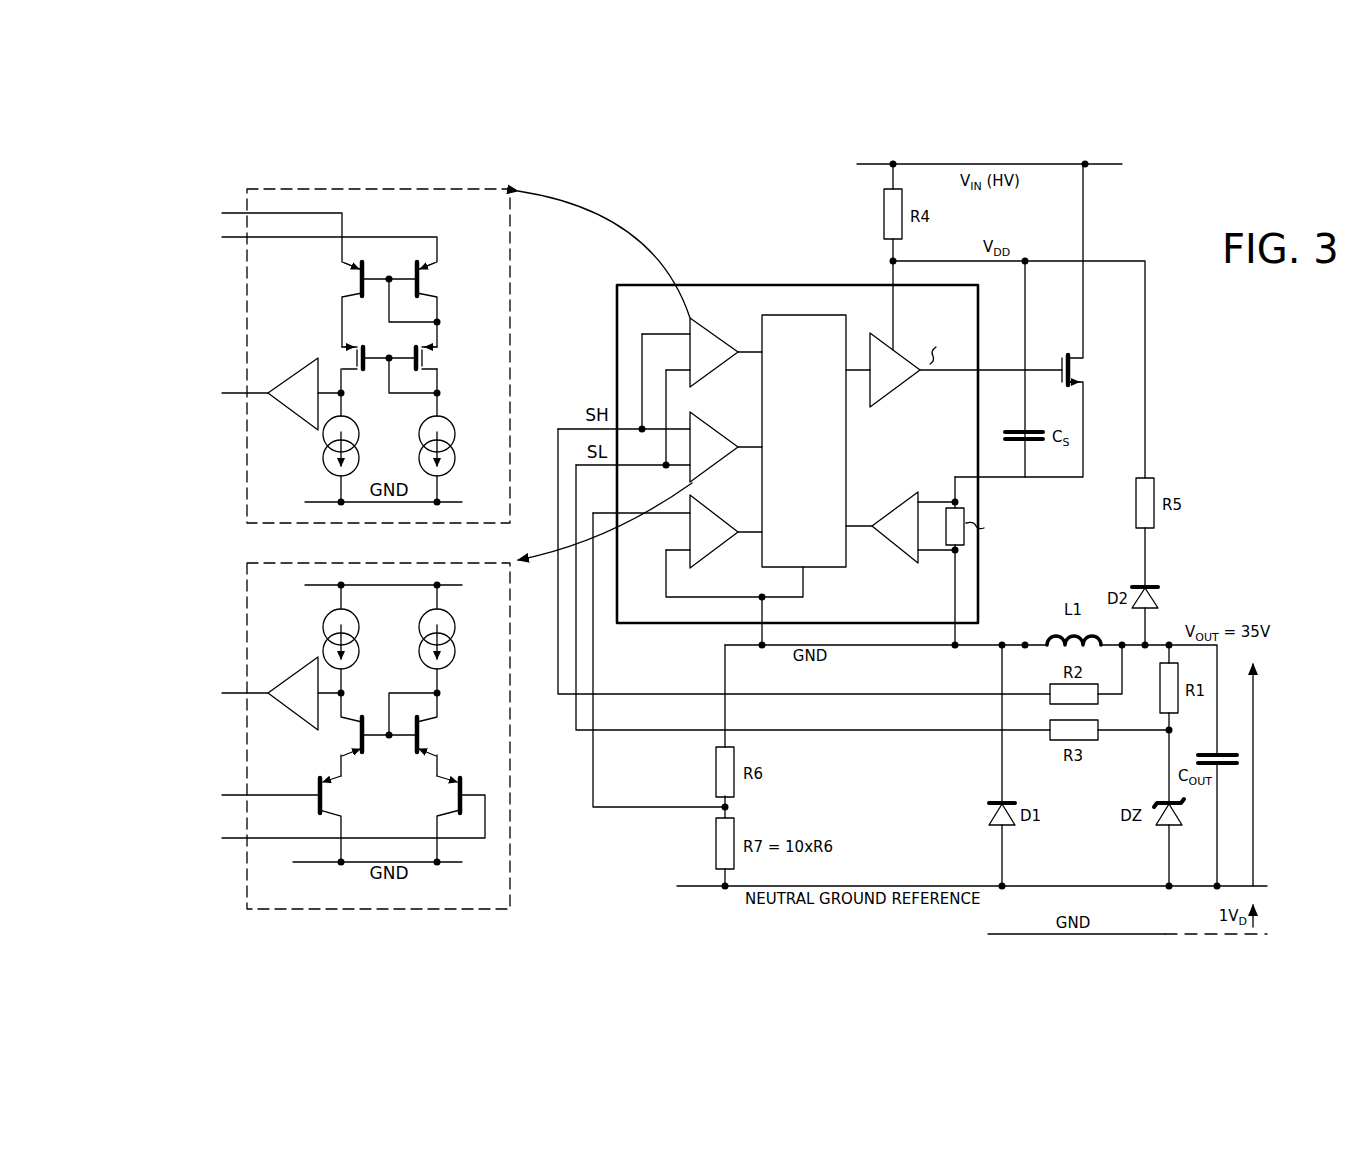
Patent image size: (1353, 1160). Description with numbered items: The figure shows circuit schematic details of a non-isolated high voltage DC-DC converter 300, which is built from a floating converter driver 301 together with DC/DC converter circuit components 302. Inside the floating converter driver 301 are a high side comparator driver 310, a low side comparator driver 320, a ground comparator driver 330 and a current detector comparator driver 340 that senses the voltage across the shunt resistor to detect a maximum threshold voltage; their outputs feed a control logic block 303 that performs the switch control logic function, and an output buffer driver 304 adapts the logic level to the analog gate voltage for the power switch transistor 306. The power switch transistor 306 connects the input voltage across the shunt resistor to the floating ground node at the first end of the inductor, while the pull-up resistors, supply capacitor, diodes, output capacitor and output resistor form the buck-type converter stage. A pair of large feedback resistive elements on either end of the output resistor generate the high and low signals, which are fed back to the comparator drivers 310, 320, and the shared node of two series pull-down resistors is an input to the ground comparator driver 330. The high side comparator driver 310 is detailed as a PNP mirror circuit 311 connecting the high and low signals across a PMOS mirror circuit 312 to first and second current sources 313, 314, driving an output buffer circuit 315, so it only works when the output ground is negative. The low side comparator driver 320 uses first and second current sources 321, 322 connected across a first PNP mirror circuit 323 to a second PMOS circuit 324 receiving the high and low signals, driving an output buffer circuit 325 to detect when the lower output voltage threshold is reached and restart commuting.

The non-isolated high voltage DC-DC converter 300 is at (216, 187).
The floating converter driver 301 is at (834, 285).
The DC/DC converter circuit components 302 is at (1159, 194).
The control logic block 303 is at (804, 441).
The output buffer driver 304 is at (898, 393).
The power switch transistor 306 is at (1064, 355).
The high side comparator driver 310 is at (247, 303).
The PNP mirror circuit 311 is at (391, 296).
The PMOS mirror circuit 312 is at (391, 361).
The first current source 313 is at (360, 432).
The second current source 314 is at (456, 432).
The output buffer circuit 315 is at (293, 366).
The low side comparator driver 320 is at (247, 605).
The first current source 321 is at (360, 625).
The second current source 322 is at (456, 625).
The first PNP mirror circuit 323 is at (377, 712).
The second PMOS circuit 324 is at (327, 820).
The output buffer circuit 325 is at (293, 665).
The ground comparator driver 330 is at (708, 506).
The current detector comparator driver 340 is at (893, 503).